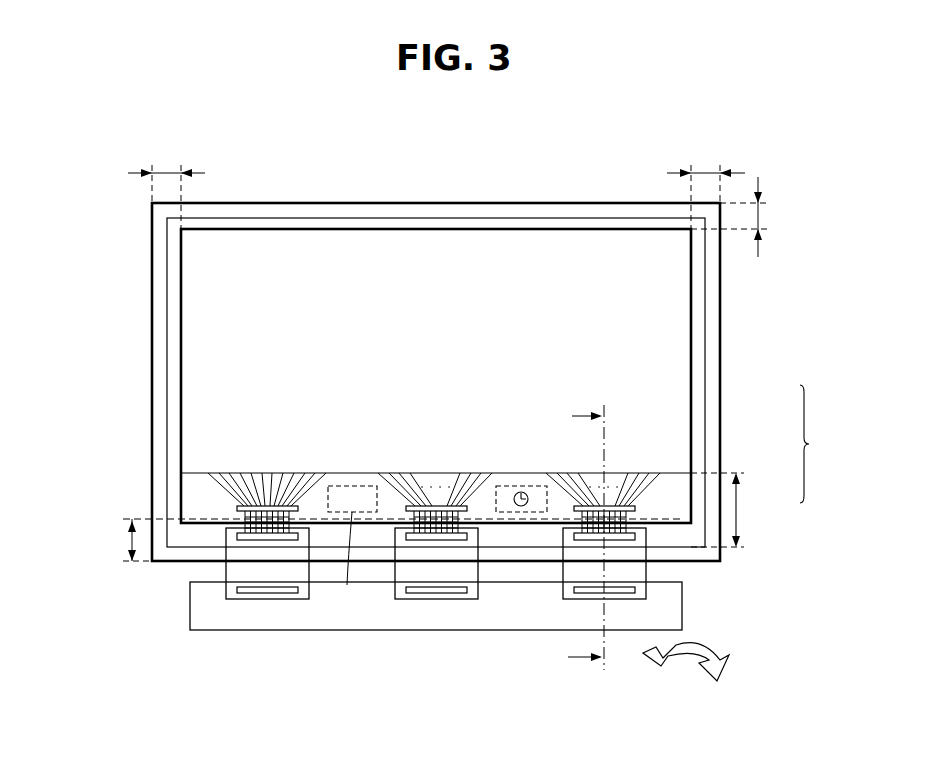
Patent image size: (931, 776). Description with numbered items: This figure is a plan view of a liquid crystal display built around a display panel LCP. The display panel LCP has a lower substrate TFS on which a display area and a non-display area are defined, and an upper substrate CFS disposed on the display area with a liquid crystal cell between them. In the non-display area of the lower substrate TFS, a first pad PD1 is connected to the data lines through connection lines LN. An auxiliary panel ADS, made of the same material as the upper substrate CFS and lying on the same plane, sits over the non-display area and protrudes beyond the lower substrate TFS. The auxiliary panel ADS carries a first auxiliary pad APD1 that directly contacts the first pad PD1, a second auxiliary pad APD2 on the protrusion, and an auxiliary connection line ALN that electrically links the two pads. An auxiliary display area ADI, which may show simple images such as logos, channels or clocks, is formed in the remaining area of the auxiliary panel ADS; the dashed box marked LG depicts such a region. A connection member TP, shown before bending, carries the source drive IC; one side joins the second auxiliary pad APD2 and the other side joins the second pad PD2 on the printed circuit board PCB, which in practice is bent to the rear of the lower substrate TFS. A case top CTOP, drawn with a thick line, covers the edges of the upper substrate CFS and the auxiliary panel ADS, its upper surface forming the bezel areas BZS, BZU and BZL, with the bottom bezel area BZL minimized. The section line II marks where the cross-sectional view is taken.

The case top CTOP is at (692, 344).
The upper substrate CFS is at (706, 398).
The lower substrate TFS is at (668, 517).
The display panel LCP is at (819, 444).
The auxiliary panel ADS is at (446, 510).
The bezel area BZS is at (436, 188).
The bezel area BZU is at (743, 217).
The bezel area BZL is at (122, 540).
The connection lines LN is at (238, 493).
The first auxiliary pad APD1 is at (339, 557).
The first pad PD1 is at (243, 508).
The auxiliary connection line ALN is at (246, 520).
The second auxiliary pad APD2 is at (243, 537).
The connection member TP is at (436, 596).
The second pad PD2 is at (268, 593).
The printed circuit board PCB is at (690, 605).
The logic / gate driver LG is at (352, 499).
The auxiliary display area ADI is at (347, 585).
The line II-II' II is at (571, 537).